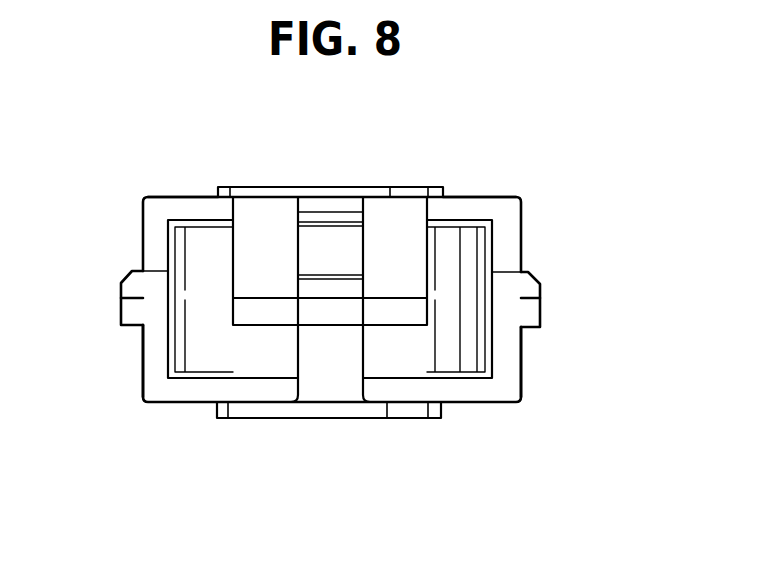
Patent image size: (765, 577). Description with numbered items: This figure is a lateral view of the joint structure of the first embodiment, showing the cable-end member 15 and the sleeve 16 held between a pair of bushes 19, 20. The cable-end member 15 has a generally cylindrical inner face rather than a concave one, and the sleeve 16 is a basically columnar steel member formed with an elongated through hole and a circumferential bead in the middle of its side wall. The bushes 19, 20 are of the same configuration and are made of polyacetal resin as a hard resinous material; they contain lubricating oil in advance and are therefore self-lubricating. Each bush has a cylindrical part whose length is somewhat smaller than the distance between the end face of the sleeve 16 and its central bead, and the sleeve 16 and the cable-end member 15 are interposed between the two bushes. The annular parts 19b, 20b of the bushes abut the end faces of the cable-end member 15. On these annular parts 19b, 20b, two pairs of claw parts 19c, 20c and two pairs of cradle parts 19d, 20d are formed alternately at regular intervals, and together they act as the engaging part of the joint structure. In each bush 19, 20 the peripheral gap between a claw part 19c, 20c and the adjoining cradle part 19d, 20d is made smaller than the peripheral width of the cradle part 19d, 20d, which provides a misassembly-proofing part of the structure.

The cable-end member 15 is at (463, 263).
The sleeve 16 is at (415, 189).
The bush 19 is at (508, 198).
The annular part 19b is at (190, 196).
The claw part 19c is at (120, 312).
The cradle part 19d is at (283, 203).
The bush 20 is at (495, 403).
The annular part 20b is at (202, 392).
The claw part 20c is at (328, 358).
The cradle part 20d is at (148, 355).